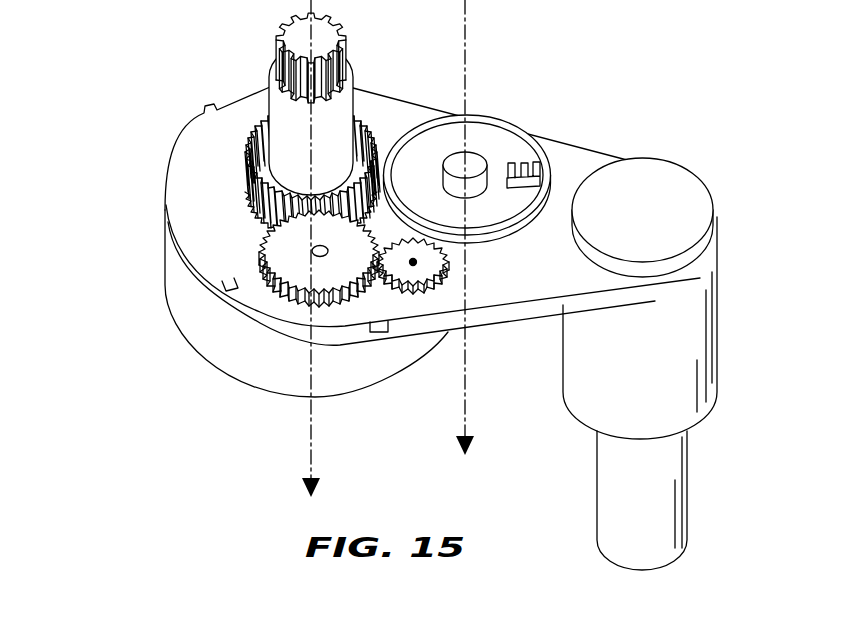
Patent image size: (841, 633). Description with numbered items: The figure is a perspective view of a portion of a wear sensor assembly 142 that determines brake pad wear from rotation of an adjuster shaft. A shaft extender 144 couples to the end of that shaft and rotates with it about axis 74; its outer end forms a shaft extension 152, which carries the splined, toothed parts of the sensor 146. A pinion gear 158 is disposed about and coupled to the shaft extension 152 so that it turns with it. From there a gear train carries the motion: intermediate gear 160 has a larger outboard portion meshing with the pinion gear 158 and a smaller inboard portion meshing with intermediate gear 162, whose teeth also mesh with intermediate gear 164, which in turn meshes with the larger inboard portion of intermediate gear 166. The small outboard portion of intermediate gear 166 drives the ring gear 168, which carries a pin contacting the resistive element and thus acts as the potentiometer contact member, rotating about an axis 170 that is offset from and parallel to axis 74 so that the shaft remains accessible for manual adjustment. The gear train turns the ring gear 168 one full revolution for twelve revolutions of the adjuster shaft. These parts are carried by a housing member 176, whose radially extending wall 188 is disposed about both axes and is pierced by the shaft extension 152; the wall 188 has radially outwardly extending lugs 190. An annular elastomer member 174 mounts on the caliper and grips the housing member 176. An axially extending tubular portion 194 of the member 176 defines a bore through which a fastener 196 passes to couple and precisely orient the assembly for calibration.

The axis 74 is at (313, 428).
The wear sensor assembly 142 is at (411, 285).
The shaft extender 144 is at (277, 163).
The sensor 146 is at (477, 133).
The shaft extension 152 is at (293, 133).
The pinion gear 158 is at (250, 182).
The intermediate gear 160 is at (283, 248).
The intermediate gear 162 is at (406, 279).
The intermediate gear 164 is at (419, 285).
The intermediate gear 166 is at (447, 257).
The ring gear 168 is at (520, 152).
The axis 170 is at (467, 412).
The member 174 is at (192, 309).
The member 176 is at (537, 277).
The radially extending wall 188 is at (384, 104).
The lugs 190 is at (228, 284).
The tubular portion 194 is at (687, 320).
The fastener 196 is at (650, 212).